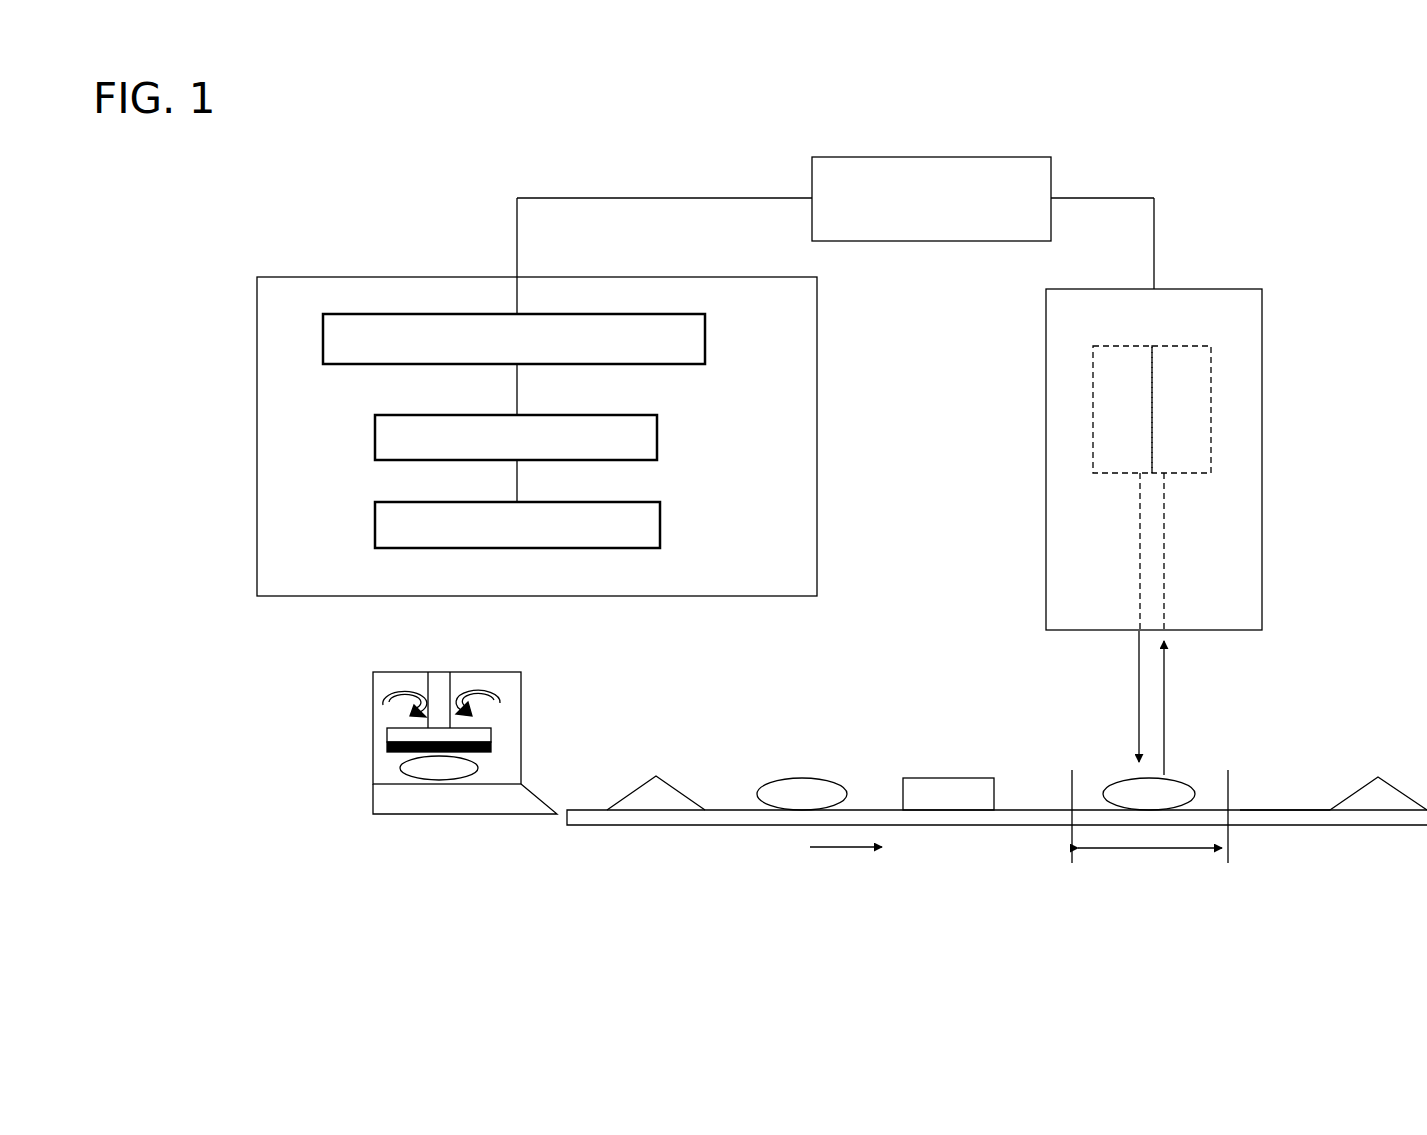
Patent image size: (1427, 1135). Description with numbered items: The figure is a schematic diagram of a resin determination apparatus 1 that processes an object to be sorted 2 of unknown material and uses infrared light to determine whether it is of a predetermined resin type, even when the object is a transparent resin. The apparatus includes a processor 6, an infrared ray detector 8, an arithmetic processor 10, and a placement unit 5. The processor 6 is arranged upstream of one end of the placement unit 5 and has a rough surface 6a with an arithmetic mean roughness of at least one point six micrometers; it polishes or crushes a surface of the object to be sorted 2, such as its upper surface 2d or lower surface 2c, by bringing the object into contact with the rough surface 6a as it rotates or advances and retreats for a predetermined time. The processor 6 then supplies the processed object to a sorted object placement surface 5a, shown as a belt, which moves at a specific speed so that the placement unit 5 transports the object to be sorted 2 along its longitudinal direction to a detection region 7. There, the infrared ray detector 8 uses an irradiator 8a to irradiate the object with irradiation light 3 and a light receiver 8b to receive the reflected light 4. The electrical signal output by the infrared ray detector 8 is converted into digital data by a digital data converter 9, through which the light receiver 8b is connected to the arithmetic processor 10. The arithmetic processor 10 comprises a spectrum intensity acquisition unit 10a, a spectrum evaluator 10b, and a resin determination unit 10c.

The resin determination apparatus 1 is at (1350, 196).
The object to be sorted 2 is at (648, 795).
The lower surface 2c is at (465, 777).
The upper surface 2d is at (457, 752).
The irradiation light 3 is at (1138, 681).
The reflected light 4 is at (1164, 687).
The placement unit 5 is at (1363, 817).
The sorted object placement surface 5a is at (1291, 802).
The processor 6 is at (366, 686).
The rough surface 6a is at (390, 763).
The detection region 7 is at (1150, 828).
The infrared ray detector 8 is at (1040, 427).
The irradiator 8a is at (1122, 387).
The light receiver 8b is at (1172, 451).
The digital data converter 9 is at (1015, 171).
The arithmetic processor 10 is at (320, 272).
The spectrum intensity acquisition unit 10a is at (706, 340).
The spectrum evaluator 10b is at (657, 435).
The resin determination unit 10c is at (660, 525).